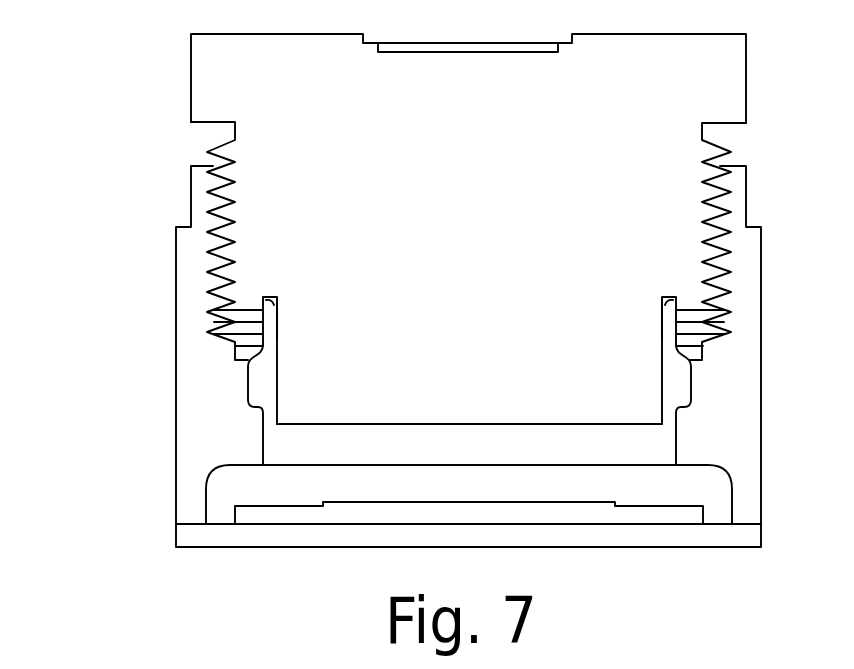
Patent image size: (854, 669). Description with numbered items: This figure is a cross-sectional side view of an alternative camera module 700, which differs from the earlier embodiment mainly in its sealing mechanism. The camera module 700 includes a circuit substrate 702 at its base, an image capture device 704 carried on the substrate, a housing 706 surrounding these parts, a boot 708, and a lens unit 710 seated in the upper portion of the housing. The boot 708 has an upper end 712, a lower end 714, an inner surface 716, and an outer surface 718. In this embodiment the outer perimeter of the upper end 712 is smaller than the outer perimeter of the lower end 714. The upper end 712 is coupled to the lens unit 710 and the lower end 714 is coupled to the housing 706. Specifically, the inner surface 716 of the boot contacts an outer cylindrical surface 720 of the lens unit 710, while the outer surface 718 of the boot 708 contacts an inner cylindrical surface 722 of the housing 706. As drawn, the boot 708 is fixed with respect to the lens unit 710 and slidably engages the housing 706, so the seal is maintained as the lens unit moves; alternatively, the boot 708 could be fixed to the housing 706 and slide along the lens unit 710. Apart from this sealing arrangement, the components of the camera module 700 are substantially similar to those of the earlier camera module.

The camera module 700 is at (73, 187).
The circuit substrate 702 is at (748, 540).
The image capture device 704 is at (307, 513).
The housing 706 is at (748, 385).
The boot 708 is at (258, 377).
The lens unit 710 is at (727, 92).
The upper end 712 is at (270, 302).
The lower end 714 is at (683, 390).
The inner surface 716 is at (280, 328).
The outer surface 718 is at (246, 386).
The outer cylindrical surface 720 is at (678, 417).
The inner cylindrical surface 722 is at (690, 365).